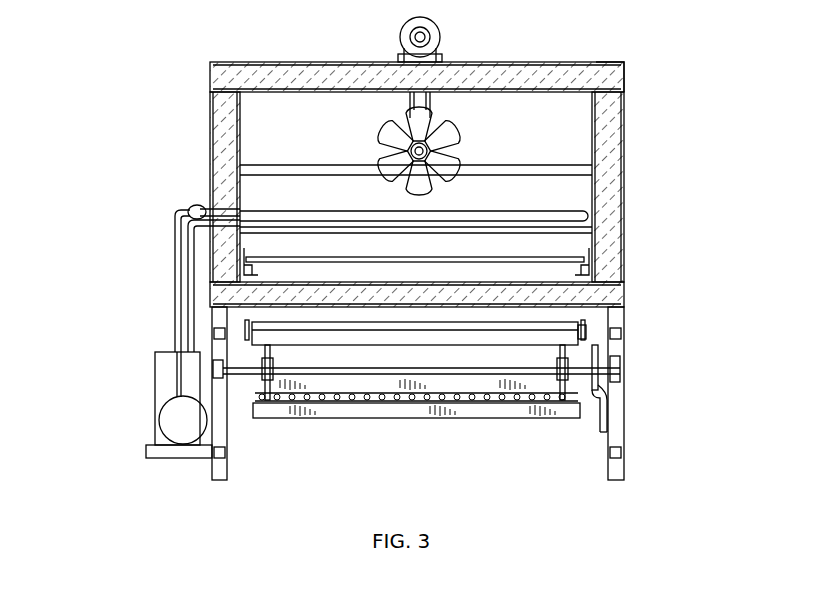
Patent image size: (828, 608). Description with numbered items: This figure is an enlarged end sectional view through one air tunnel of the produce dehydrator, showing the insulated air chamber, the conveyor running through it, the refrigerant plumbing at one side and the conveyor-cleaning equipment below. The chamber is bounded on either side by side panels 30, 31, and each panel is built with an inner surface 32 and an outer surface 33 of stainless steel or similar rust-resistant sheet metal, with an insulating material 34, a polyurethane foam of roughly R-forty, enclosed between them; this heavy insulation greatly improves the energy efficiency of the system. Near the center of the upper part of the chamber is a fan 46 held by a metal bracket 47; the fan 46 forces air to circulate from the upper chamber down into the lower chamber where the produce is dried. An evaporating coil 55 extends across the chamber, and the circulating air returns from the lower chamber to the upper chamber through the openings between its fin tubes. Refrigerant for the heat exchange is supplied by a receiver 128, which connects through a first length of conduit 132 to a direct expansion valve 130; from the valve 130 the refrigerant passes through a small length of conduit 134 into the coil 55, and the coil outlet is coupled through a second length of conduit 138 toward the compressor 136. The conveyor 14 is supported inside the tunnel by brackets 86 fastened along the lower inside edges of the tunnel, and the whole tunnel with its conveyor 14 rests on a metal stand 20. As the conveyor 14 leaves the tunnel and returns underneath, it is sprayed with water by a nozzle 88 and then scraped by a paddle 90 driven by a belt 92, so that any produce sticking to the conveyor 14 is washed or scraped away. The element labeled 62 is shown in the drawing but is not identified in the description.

The conveyor 14 is at (428, 258).
The metal stand 20 is at (350, 388).
The side panel 30 is at (628, 152).
The side panel 31 is at (205, 136).
The inner surface 32 is at (592, 128).
The outer surface 33 is at (623, 92).
The insulating material 34 is at (282, 68).
The fan 46 is at (380, 130).
The metal bracket 47 is at (303, 165).
The evaporating coil 55 is at (452, 208).
The motor 62 is at (440, 100).
The brackets 86 is at (256, 270).
The nozzle 88 is at (480, 403).
The paddle 90 is at (582, 340).
The belt 92 is at (598, 352).
The receiver 128 is at (172, 421).
The direct expansion valve 130 is at (190, 210).
The first length of conduit 132 is at (175, 272).
The small length of conduit 134 is at (192, 206).
The compressor 136 is at (155, 381).
The second length of conduit 138 is at (195, 226).